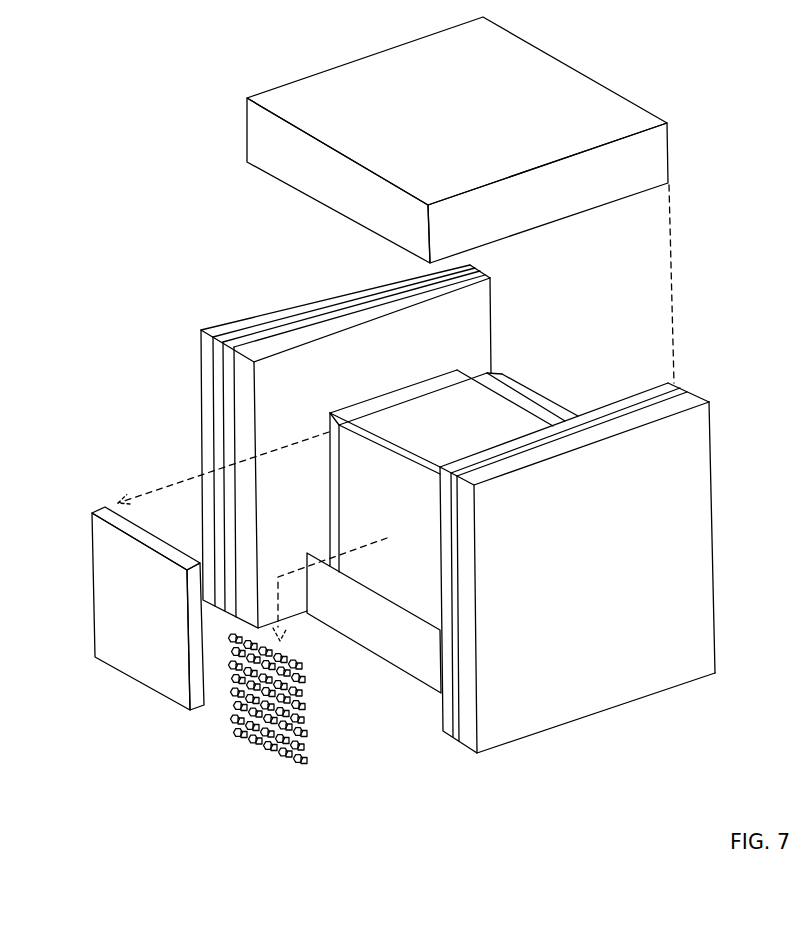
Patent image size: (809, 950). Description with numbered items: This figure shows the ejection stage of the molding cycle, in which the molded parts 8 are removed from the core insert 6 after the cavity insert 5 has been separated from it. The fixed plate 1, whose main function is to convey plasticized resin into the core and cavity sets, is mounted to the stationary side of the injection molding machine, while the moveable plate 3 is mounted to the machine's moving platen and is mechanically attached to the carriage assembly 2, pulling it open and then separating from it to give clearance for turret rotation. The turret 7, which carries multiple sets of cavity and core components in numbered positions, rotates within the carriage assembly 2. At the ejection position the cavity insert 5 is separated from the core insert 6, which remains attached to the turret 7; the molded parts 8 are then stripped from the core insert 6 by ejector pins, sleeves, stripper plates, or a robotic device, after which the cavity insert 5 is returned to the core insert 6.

The fixed plate 1 is at (260, 330).
The carriage assembly 2 is at (442, 693).
The moveable plate 3 is at (583, 718).
The cavity insert 5 is at (95, 512).
The core insert 6 is at (387, 580).
The turret 7 is at (482, 410).
The molded parts 8 is at (252, 737).